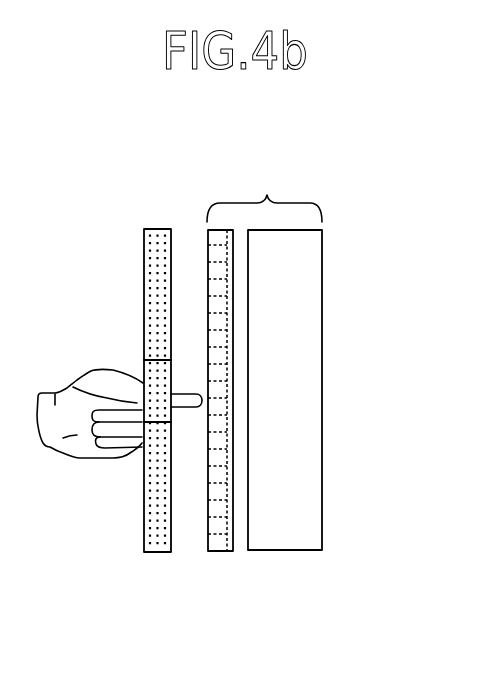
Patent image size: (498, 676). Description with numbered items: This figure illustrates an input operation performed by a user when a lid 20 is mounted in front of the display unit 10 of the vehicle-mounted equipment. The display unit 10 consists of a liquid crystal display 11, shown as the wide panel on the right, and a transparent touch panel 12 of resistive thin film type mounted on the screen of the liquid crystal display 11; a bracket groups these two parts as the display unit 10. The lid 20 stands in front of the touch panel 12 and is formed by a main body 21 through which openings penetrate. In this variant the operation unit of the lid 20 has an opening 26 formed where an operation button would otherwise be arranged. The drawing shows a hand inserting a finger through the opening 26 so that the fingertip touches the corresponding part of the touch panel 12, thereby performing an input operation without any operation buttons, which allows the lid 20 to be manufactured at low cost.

The display unit 10 is at (268, 191).
The liquid crystal display 11 is at (317, 283).
The touch panel 12 is at (218, 546).
The lid 20 is at (162, 221).
The main body 21 is at (147, 282).
The opening 26 is at (145, 372).